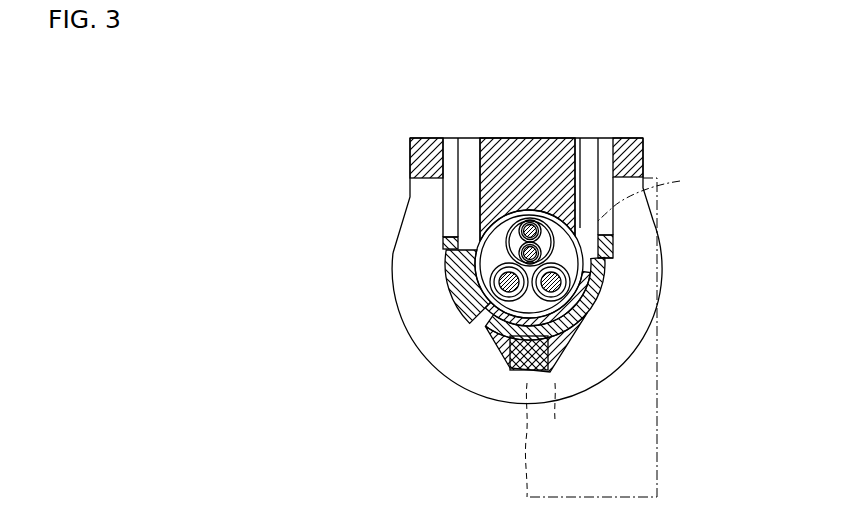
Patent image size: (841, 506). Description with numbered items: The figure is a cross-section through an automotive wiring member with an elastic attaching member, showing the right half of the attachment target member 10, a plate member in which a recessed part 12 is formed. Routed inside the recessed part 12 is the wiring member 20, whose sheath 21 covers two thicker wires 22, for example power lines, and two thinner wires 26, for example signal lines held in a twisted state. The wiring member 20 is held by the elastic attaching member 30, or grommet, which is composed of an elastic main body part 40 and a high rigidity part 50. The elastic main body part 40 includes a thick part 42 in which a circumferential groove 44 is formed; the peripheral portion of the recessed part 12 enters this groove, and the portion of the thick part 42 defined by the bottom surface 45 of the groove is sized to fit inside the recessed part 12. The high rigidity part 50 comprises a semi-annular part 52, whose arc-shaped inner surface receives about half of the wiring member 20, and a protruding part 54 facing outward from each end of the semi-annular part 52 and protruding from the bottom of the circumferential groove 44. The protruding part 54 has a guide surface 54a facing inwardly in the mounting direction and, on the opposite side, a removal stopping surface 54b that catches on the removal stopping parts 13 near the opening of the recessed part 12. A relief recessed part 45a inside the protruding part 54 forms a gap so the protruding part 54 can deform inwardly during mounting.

The attachment target member 10 is at (657, 462).
The recessed part 12 is at (550, 440).
The removal stopping part 13 is at (655, 194).
The wiring member 20 is at (548, 222).
The sheath 21 is at (492, 322).
The wire 22 is at (551, 284).
The wire 26 is at (528, 253).
The elastic attaching member 30 is at (420, 132).
The elastic main body part 40 is at (528, 132).
The thick part 42 is at (408, 200).
The circumferential groove 44 is at (450, 362).
The bottom surface 45 is at (476, 326).
The relief recessed part 45a is at (480, 236).
The high rigidity part 50 is at (590, 300).
The semi-annular part 52 is at (578, 318).
The protruding part 54 is at (447, 240).
The guide surface 54a is at (616, 257).
The removal stopping surface 54b is at (613, 236).